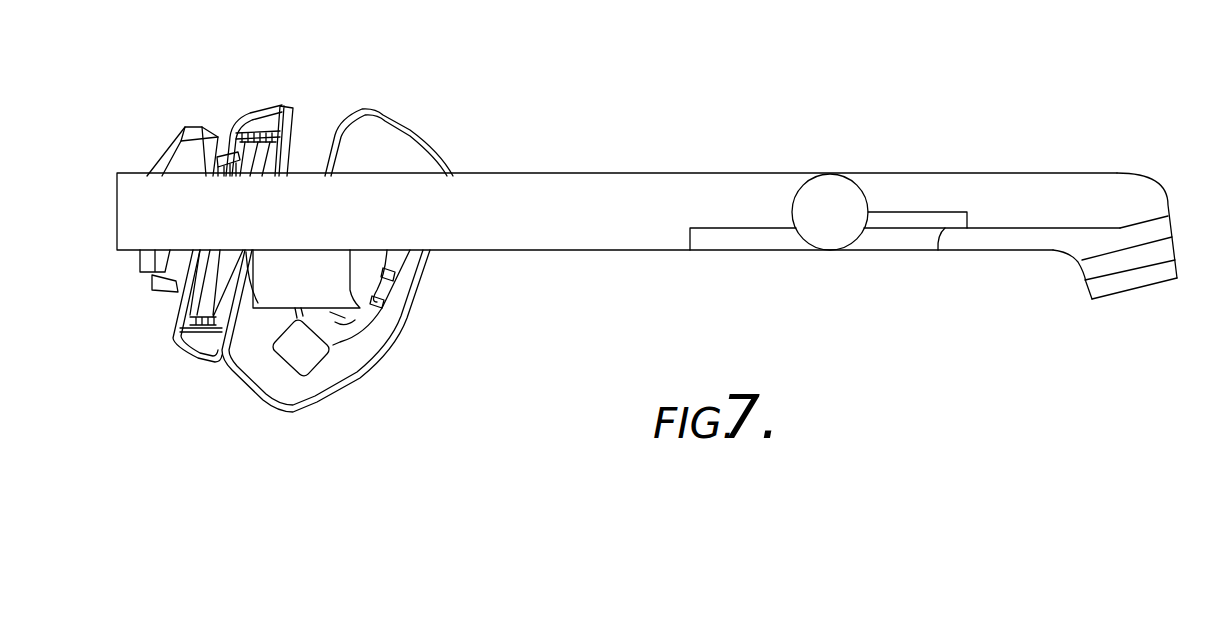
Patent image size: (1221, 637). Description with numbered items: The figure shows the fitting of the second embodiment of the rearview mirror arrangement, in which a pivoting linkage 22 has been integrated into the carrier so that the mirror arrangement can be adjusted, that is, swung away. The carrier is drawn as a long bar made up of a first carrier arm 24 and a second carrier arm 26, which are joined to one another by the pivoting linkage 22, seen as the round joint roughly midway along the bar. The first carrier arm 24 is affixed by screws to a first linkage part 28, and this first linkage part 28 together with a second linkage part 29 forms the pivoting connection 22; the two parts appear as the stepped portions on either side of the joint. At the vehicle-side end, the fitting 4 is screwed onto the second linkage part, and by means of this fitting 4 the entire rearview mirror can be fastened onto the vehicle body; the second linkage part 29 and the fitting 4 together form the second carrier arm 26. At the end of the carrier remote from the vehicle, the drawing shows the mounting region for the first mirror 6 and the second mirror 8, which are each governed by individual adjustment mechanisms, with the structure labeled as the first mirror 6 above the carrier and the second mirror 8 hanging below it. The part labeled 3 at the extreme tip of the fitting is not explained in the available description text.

The tip 3 is at (1127, 293).
The fitting 4 is at (1057, 257).
The first mirror 6 is at (280, 102).
The second mirror 8 is at (308, 388).
The pivoting linkage 22 is at (859, 172).
The first carrier arm 24 is at (532, 205).
The second carrier arm 26 is at (1028, 180).
The first linkage part 28 is at (703, 242).
The second linkage part 29 is at (900, 220).